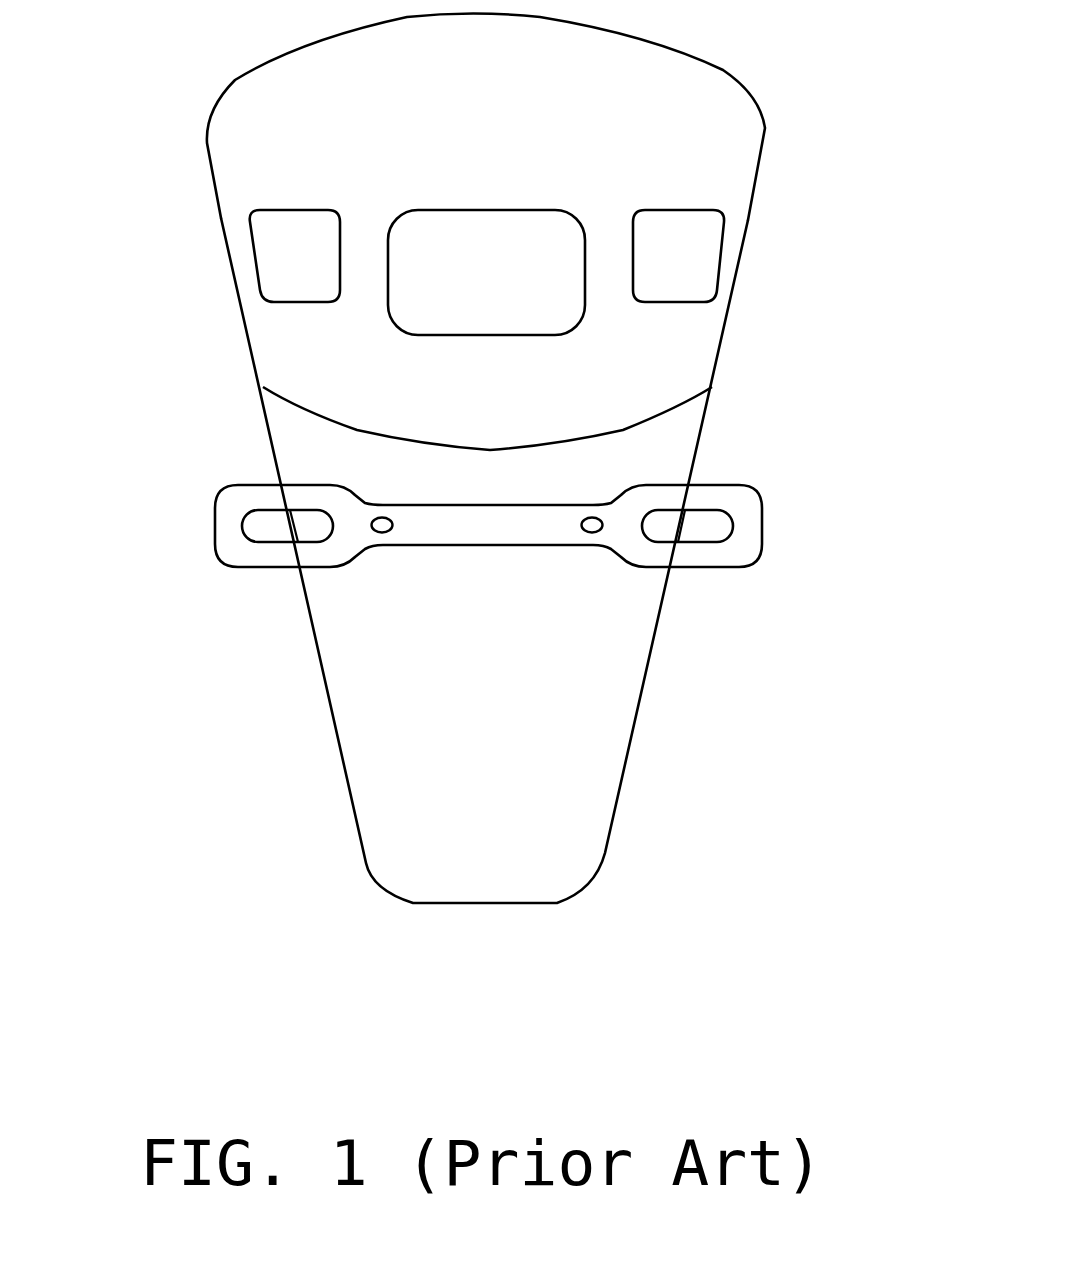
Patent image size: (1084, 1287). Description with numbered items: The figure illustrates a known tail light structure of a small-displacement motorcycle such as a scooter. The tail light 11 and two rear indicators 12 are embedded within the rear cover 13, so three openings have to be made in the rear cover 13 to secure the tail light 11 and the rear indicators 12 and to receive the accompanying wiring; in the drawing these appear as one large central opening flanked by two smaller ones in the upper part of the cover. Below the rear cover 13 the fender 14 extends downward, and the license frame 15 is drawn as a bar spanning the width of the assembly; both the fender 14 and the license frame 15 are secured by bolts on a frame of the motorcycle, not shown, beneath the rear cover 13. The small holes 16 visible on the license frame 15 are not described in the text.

The tail light 11 is at (485, 227).
The rear indicator 12 is at (260, 223).
The rear cover 13 is at (308, 345).
The fender 14 is at (595, 770).
The license frame 15 is at (737, 548).
The hole 16 is at (382, 518).